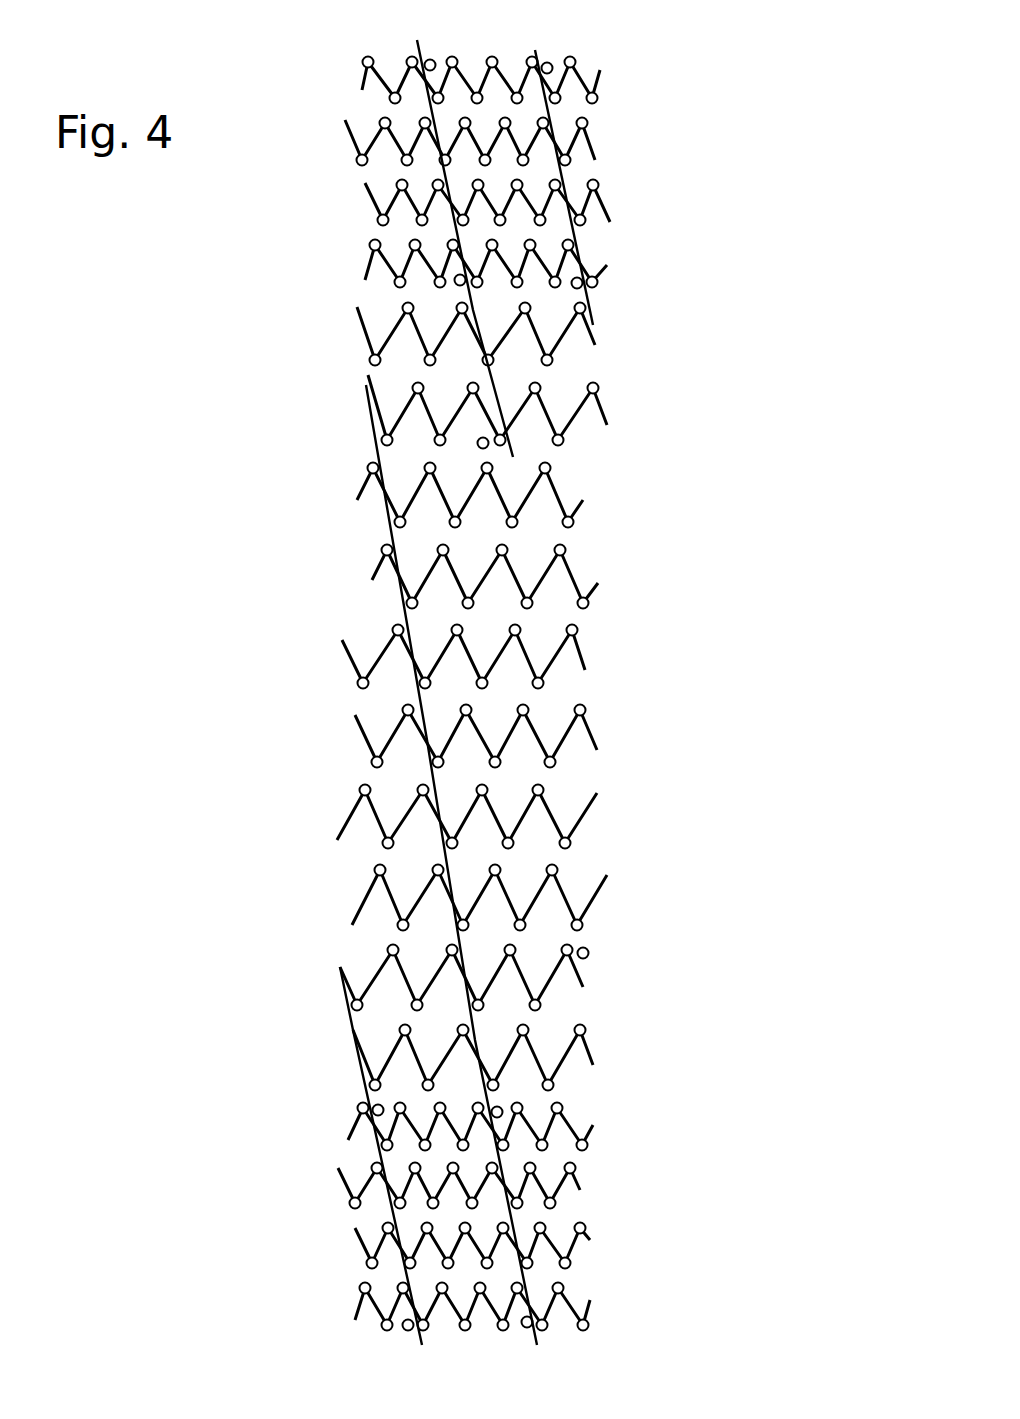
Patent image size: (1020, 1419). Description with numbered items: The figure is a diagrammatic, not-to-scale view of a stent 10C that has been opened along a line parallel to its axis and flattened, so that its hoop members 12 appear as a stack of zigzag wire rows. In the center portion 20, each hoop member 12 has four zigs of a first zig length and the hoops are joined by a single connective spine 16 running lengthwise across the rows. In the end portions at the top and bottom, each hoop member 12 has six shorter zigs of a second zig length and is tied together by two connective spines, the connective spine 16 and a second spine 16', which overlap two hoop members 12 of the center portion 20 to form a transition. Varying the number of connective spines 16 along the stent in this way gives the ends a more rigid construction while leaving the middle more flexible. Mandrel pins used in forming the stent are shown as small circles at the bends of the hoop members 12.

The stent 10C is at (625, 513).
The hoop member 12 is at (330, 1131).
The connective spine 16 is at (468, 681).
The second longitudinal connecting member 16' is at (383, 675).
The center portion 20 is at (240, 1095).